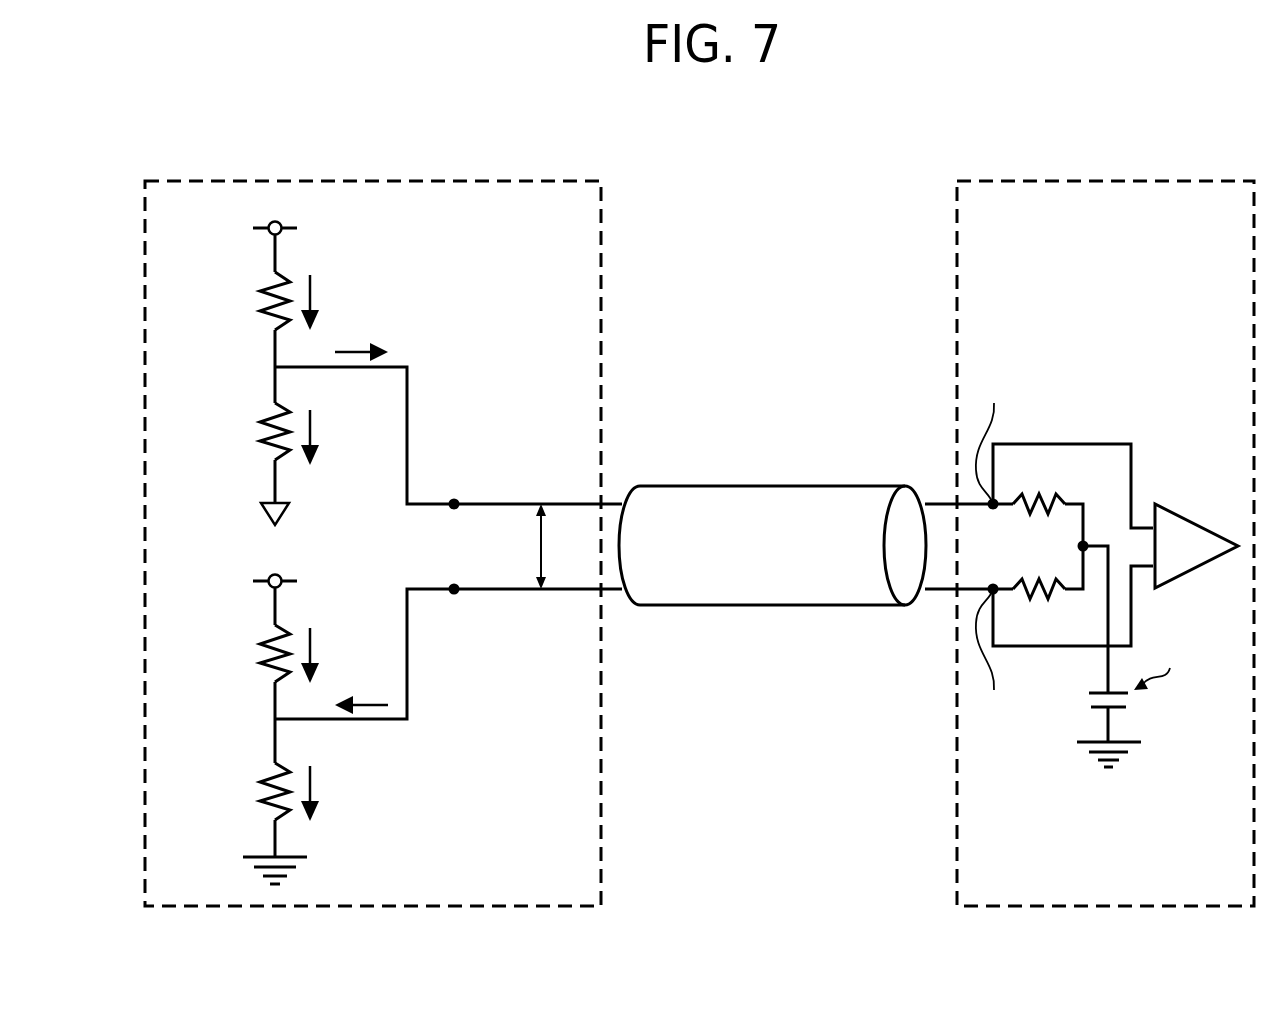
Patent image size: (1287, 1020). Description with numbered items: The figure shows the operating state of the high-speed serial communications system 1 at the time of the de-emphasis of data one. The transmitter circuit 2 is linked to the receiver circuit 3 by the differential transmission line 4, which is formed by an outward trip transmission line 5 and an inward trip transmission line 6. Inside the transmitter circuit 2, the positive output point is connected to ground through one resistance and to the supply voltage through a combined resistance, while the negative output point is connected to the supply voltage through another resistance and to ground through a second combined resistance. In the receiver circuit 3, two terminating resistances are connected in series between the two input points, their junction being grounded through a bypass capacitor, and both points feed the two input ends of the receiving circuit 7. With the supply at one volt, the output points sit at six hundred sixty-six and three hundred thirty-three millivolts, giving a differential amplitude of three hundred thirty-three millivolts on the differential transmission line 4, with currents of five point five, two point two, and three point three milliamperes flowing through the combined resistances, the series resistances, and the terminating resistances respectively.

The high-speed serial communications system 1 is at (1246, 128).
The transmitter circuit 2 is at (500, 181).
The receiver circuit 3 is at (1177, 181).
The differential transmission line 4 is at (752, 486).
The outward trip transmission line 5 is at (937, 503).
The inward trip transmission line 6 is at (937, 590).
The receiving circuit 7 is at (1190, 517).